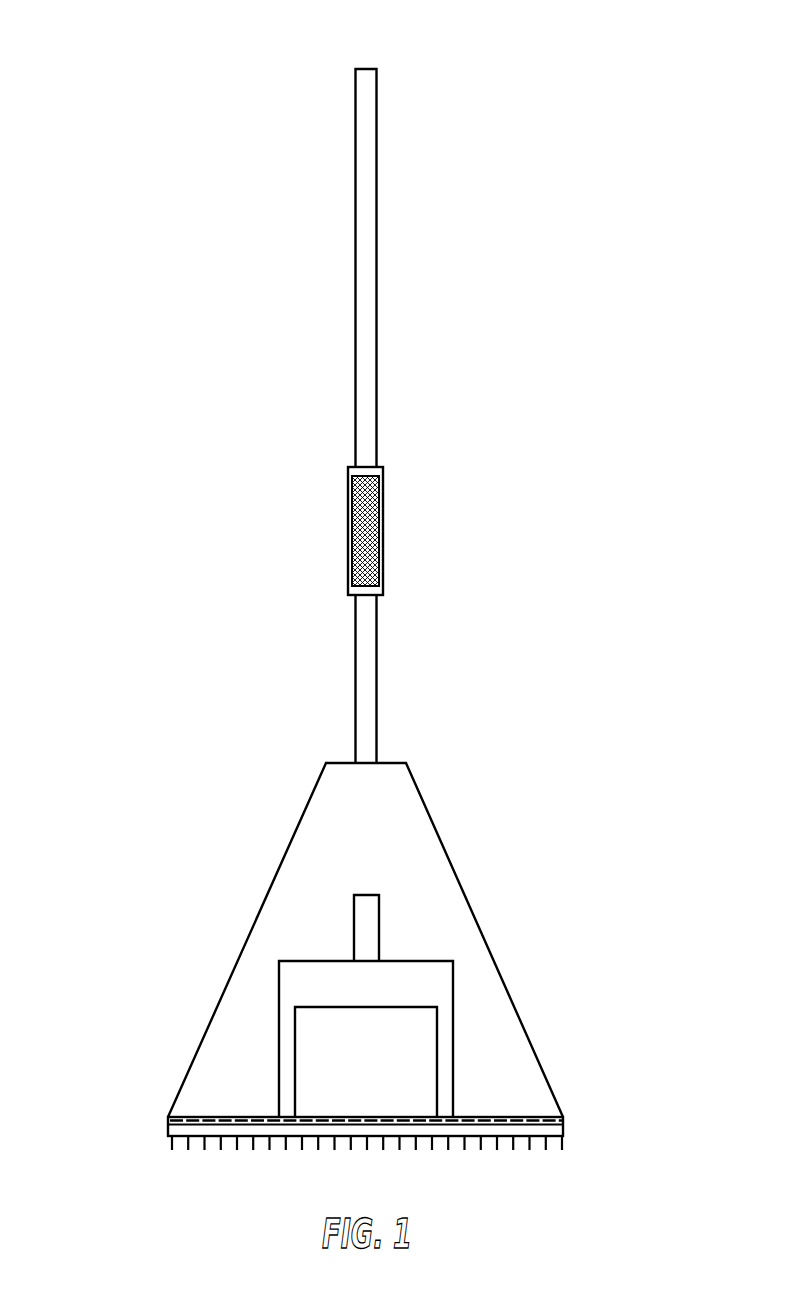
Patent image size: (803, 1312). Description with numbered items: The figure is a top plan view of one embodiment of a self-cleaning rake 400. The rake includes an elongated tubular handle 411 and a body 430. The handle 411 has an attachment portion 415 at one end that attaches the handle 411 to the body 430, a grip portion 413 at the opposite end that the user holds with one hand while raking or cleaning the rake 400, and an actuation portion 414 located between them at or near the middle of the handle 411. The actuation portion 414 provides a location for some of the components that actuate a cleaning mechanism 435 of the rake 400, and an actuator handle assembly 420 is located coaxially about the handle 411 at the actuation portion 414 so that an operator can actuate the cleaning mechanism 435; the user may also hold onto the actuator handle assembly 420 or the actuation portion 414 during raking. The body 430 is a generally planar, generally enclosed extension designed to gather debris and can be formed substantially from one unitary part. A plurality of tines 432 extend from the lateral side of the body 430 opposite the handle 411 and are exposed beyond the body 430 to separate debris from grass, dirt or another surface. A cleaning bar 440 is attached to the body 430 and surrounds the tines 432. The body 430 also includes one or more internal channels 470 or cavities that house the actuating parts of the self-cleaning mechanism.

The self-cleaning rake 400 is at (174, 64).
The handle 411 is at (368, 179).
The grip portion 413 is at (279, 161).
The actuation portion 414 is at (444, 471).
The actuator handle assembly 420 is at (372, 550).
The attachment portion 415 is at (466, 756).
The body 430 is at (422, 845).
The cleaning mechanism 435 is at (157, 890).
The internal channel 470 is at (437, 976).
The cleaning bar 440 is at (565, 1128).
The tines 432 is at (188, 1137).